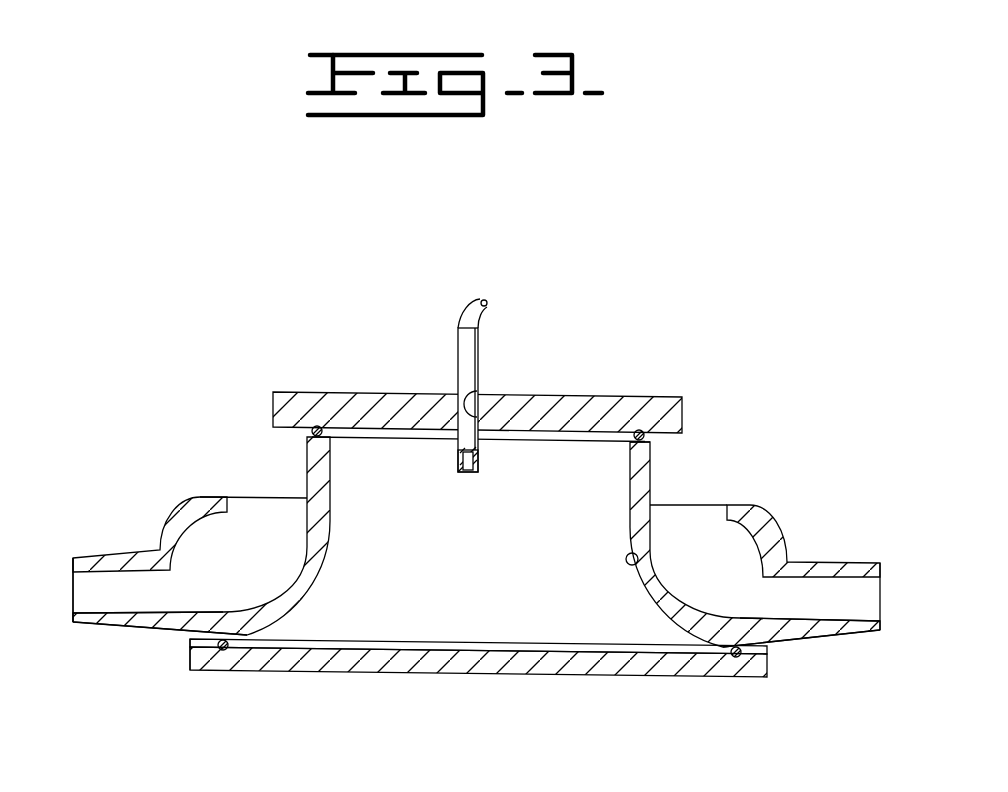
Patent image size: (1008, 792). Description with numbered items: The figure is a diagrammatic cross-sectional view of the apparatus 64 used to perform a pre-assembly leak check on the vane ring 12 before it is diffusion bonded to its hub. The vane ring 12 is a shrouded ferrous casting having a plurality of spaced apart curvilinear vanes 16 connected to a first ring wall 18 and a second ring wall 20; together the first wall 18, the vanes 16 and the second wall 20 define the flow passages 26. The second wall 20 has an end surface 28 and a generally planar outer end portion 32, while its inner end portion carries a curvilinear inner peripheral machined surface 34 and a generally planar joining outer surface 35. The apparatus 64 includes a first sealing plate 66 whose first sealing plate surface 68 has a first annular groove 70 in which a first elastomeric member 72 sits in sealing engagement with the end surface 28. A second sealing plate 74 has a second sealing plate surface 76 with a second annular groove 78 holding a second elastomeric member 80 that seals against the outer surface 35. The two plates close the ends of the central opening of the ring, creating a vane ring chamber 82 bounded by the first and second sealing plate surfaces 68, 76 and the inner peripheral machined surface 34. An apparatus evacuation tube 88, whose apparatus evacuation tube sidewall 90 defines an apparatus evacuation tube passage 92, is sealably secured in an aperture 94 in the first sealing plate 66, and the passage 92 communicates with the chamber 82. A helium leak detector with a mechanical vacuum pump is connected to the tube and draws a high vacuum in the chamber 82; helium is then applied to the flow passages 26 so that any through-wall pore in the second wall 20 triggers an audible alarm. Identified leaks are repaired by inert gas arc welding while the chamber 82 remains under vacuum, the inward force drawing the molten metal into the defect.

The vane ring 12 is at (163, 650).
The vanes 16 is at (240, 592).
The first ring wall 18 is at (155, 550).
The second ring wall 20 is at (90, 608).
The flow passages 26 is at (148, 600).
The end surface 28 is at (647, 436).
The outer end portion 32 is at (843, 630).
The inner peripheral machined surface 34 is at (640, 556).
The outer surface 35 is at (190, 637).
The apparatus 64 is at (762, 366).
The first sealing plate 66 is at (576, 393).
The first sealing plate surface 68 is at (414, 436).
The first annular groove 70 is at (314, 432).
The first elastomeric member 72 is at (643, 431).
The second sealing plate 74 is at (548, 677).
The second sealing plate surface 76 is at (340, 644).
The second annular groove 78 is at (255, 643).
The second elastomeric member 80 is at (736, 657).
The vane ring chamber 82 is at (430, 572).
The apparatus evacuation tube 88 is at (473, 370).
The apparatus evacuation tube sidewall 90 is at (477, 456).
The apparatus evacuation tube passage 92 is at (467, 477).
The aperture 94 is at (478, 389).